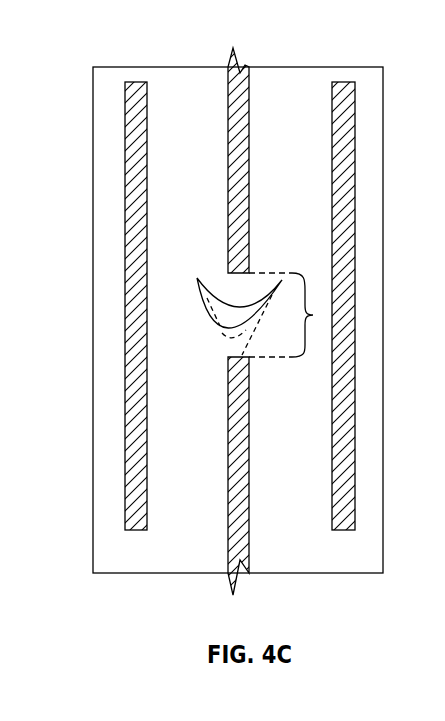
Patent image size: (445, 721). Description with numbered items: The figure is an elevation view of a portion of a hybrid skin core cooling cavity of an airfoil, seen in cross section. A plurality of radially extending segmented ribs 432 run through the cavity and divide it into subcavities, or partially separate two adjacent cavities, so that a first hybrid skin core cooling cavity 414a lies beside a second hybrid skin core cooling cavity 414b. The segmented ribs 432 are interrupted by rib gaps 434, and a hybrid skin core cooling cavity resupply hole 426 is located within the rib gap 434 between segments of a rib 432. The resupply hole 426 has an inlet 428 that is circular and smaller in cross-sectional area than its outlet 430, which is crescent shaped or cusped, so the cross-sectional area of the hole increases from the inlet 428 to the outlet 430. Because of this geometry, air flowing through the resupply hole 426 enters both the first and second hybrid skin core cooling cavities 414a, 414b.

The first hybrid skin core cooling cavity 414a is at (208, 185).
The second hybrid skin core cooling cavity 414b is at (324, 185).
The hybrid skin core cooling cavity resupply hole 426 is at (212, 326).
The inlet 428 is at (235, 353).
The outlet 430 is at (196, 286).
The radially extending segmented ribs 432 is at (232, 488).
The rib gap 434 is at (120, 562).